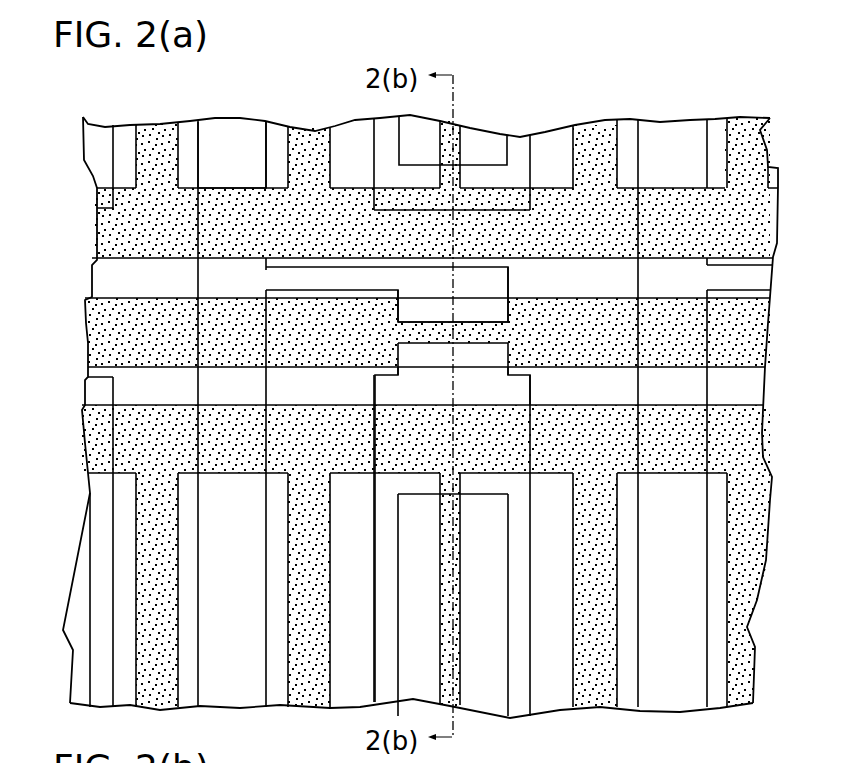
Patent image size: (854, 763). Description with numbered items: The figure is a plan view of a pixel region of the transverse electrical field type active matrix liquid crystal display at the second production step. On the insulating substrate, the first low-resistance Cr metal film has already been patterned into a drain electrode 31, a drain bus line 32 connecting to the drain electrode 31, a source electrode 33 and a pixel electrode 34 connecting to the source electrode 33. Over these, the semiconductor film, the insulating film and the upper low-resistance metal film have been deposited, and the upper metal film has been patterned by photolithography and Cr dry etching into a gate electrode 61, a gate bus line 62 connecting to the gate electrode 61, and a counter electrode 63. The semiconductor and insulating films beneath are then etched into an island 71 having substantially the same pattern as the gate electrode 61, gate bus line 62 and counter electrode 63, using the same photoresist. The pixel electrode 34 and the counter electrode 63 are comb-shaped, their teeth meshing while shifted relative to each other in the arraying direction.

The drain electrode 31 is at (377, 277).
The drain bus line 32 is at (222, 140).
The source electrode 33 is at (488, 362).
The pixel electrode 34 is at (517, 705).
The gate electrode 61 is at (475, 333).
The gate bus line 62 is at (760, 337).
The counter electrode 63 is at (305, 697).
The island 71 is at (475, 333).